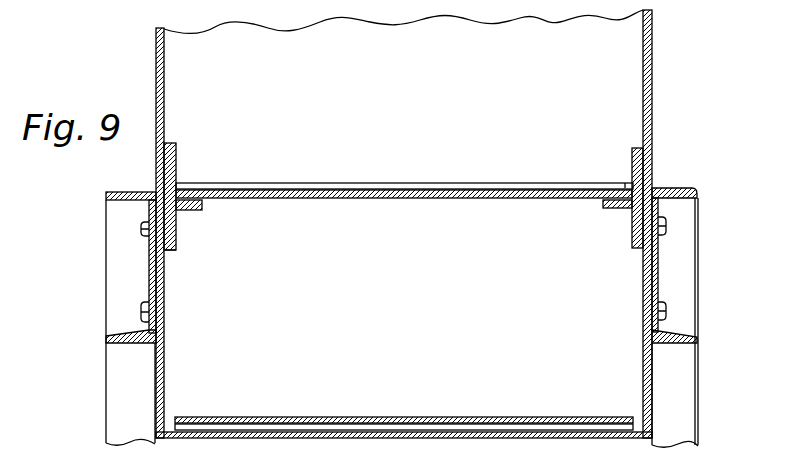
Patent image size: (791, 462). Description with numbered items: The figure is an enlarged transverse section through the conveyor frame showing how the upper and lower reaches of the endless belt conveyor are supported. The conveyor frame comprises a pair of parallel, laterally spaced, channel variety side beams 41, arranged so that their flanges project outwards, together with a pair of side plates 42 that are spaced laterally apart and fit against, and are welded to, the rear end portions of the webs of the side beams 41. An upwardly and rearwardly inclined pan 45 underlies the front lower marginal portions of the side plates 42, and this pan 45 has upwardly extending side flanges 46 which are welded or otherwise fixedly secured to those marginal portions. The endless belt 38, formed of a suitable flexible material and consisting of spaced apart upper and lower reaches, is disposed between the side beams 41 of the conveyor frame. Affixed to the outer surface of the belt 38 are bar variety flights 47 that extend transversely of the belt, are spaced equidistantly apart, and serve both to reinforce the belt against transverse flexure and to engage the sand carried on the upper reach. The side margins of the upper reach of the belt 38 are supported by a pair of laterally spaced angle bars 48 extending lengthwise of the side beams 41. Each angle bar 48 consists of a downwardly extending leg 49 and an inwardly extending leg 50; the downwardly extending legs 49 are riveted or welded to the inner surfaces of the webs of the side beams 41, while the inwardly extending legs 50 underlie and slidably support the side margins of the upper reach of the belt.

The endless belt 38 is at (297, 198).
The side beams 41 is at (128, 192).
The side plates 42 is at (652, 106).
The pan 45 is at (245, 438).
The side flanges 46 is at (157, 394).
The flights 47 is at (330, 183).
The angle bars 48 is at (176, 240).
The downwardly extending legs 49 is at (176, 250).
The inwardly extending legs 50 is at (192, 210).